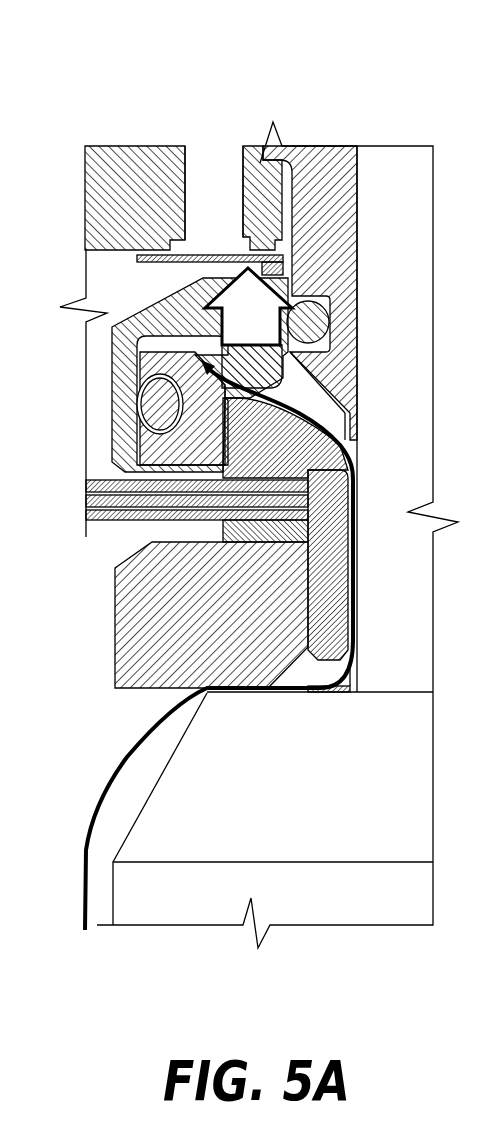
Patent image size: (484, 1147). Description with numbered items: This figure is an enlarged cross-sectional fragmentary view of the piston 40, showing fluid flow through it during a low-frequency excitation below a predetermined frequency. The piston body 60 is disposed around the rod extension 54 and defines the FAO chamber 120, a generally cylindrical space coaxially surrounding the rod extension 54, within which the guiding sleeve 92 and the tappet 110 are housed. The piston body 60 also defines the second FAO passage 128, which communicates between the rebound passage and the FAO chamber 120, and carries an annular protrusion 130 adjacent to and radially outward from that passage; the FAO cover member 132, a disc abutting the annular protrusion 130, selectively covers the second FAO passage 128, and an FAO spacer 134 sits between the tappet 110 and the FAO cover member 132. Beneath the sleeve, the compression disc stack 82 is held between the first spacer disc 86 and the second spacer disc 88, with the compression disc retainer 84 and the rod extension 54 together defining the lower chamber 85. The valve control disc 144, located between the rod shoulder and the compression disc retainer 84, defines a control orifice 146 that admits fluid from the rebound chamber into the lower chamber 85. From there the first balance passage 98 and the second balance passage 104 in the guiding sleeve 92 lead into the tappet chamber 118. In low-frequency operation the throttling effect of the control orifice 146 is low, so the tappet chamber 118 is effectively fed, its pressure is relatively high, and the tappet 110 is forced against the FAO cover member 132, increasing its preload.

The piston 40 is at (133, 70).
The rod extension 54 is at (415, 342).
The piston body 60 is at (131, 158).
The compression disc stack 82 is at (80, 483).
The compression disc retainer 84 is at (133, 605).
The lower chamber 85 is at (352, 672).
The first spacer disc 86 is at (223, 528).
The second spacer disc 88 is at (300, 477).
The guiding sleeve 92 is at (362, 202).
The first balance passage 98 is at (357, 496).
The second balance passage 104 is at (343, 432).
The tappet 110 is at (166, 289).
The tappet chamber 118 is at (150, 346).
The FAO chamber 120 is at (97, 281).
The second FAO passage 128 is at (198, 163).
The annular protrusion 130 is at (137, 255).
The FAO cover member 132 is at (208, 256).
The FAO spacer 134 is at (278, 272).
The valve control disc 144 is at (332, 694).
The control orifice 146 is at (294, 694).